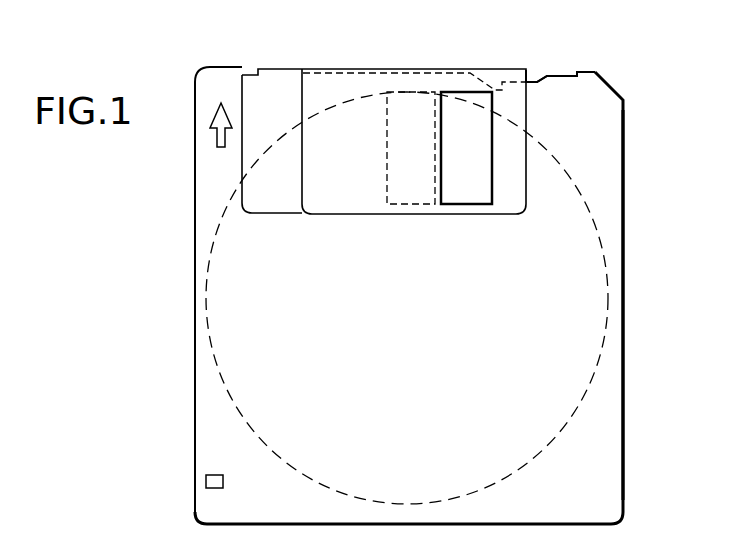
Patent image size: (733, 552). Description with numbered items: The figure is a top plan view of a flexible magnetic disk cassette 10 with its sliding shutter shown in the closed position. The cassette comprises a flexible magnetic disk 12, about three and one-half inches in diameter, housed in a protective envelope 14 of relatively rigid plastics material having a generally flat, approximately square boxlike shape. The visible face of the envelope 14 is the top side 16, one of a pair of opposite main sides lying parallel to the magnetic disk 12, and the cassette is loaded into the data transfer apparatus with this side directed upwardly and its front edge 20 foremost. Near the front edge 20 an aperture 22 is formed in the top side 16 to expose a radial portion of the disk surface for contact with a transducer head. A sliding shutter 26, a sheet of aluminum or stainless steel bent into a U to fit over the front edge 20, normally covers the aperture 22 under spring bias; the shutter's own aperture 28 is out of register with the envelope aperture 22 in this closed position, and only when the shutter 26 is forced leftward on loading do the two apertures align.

The disk cassette 10 is at (604, 67).
The flexible magnetic disk 12 is at (561, 428).
The protective envelope 14 is at (625, 252).
The top side 16 is at (199, 424).
The front edge 20 is at (531, 80).
The aperture 22 is at (398, 120).
The sliding shutter 26 is at (325, 83).
The shutter aperture 28 is at (488, 194).